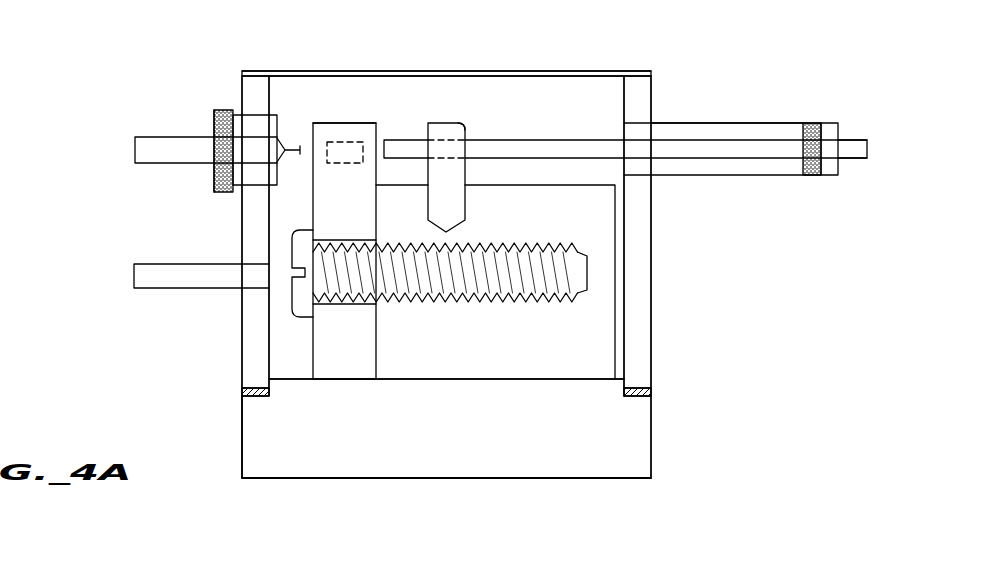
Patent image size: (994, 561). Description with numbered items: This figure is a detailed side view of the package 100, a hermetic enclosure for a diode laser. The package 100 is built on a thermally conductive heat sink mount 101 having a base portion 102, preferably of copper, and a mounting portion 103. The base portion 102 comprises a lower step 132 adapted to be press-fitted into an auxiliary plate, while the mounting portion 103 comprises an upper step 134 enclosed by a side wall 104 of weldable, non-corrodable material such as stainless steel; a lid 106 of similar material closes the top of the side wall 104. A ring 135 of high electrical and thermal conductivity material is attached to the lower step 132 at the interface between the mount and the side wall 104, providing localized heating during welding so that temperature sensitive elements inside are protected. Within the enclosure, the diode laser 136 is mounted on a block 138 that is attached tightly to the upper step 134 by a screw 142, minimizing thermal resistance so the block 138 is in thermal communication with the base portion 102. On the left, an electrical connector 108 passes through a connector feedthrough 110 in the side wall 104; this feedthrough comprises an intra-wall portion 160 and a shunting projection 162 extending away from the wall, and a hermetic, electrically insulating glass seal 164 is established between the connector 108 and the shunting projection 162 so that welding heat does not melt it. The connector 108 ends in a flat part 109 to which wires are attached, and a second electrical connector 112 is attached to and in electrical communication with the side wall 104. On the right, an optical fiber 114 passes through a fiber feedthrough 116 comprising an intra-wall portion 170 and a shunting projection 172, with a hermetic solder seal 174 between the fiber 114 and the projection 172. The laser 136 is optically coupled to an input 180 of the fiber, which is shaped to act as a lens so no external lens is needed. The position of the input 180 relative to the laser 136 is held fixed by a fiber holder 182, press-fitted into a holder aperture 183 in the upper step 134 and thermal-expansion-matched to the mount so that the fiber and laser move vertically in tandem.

The package 100 is at (712, 321).
The heat sink mount 101 is at (602, 493).
The base portion 102 is at (243, 427).
The mounting portion 103 is at (278, 315).
The side wall 104 is at (241, 300).
The lid 106 is at (605, 70).
The electrical connector 108 is at (197, 137).
The flat part 109 is at (298, 158).
The connector feedthrough 110 is at (258, 186).
The electrical connector 112 is at (183, 263).
The optical fiber 114 is at (861, 139).
The fiber feedthrough 116 is at (775, 176).
The lower step 132 is at (652, 438).
The upper step 134 is at (605, 318).
The ring 135 is at (652, 392).
The diode laser 136 is at (342, 145).
The block 138 is at (351, 122).
The screw 142 is at (473, 302).
The intra-wall portion 160 is at (255, 93).
The shunting projection 162 is at (225, 97).
The hermetic electrically insulating seal 164 is at (213, 173).
The intra-wall portion 170 is at (634, 92).
The shunting projection 172 is at (746, 104).
The hermetic seal 174 is at (817, 176).
The input 180 is at (393, 139).
The fiber holder 182 is at (443, 122).
The holder aperture 183 is at (457, 128).